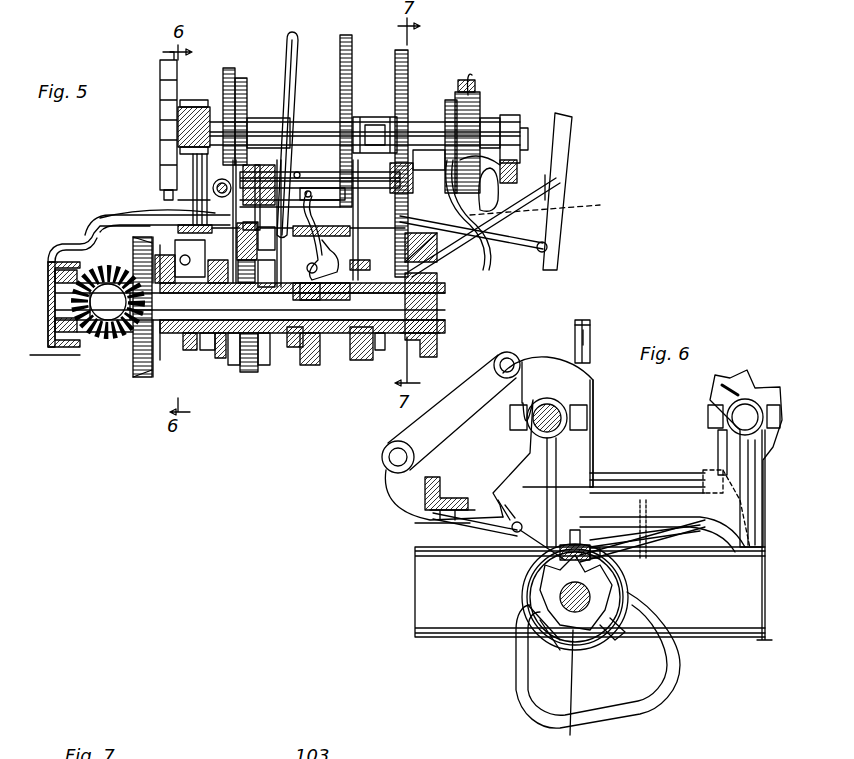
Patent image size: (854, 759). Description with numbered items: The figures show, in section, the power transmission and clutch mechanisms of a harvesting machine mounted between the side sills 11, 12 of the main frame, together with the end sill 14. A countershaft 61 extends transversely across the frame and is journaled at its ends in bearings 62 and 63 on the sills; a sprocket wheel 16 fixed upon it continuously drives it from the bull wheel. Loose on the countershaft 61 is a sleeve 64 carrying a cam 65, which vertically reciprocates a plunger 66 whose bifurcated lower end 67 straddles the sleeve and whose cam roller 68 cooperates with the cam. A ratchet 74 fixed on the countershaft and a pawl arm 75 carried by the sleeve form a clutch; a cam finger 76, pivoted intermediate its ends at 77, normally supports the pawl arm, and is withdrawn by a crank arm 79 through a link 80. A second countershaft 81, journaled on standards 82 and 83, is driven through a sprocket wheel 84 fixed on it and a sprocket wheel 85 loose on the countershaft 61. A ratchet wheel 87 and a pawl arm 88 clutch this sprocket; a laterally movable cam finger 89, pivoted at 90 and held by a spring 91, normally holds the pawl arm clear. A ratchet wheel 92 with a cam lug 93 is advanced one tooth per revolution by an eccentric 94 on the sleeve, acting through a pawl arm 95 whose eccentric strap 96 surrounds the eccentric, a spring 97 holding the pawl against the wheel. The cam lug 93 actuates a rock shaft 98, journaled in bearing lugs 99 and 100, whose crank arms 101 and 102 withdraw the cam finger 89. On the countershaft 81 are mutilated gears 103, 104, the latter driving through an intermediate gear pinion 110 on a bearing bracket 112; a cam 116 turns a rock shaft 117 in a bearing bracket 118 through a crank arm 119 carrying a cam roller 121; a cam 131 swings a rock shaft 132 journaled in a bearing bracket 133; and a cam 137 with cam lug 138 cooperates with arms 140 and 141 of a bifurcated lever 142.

In FIG. 5, the side sill 11 is at (57, 350).
In FIG. 5, the side sill 12 is at (437, 333).
In FIG. 6, the side sill 12 is at (420, 628).
In FIG. 6, the end sill 14 is at (763, 640).
In FIG. 5, the sprocket wheel 16 is at (295, 347).
In FIG. 5, the countershaft 61 is at (432, 293).
In FIG. 6, the countershaft 61 is at (560, 595).
In FIG. 5, the bearing 62 is at (50, 322).
In FIG. 5, the bearing 63 is at (432, 330).
In FIG. 5, the sleeve 64 is at (238, 365).
In FIG. 5, the cam 65 is at (248, 372).
In FIG. 6, the cam 65 is at (520, 705).
In FIG. 5, the plunger 66 is at (248, 124).
In FIG. 6, the plunger 66 is at (588, 332).
In FIG. 5, the bifurcated lower end 67 is at (264, 365).
In FIG. 5, the cam roller 68 is at (258, 180).
In FIG. 5, the ratchet wheel 74 is at (310, 365).
In FIG. 5, the pawl arm 75 is at (313, 235).
In FIG. 5, the cam finger 76 is at (355, 333).
In FIG. 5, the pivot 77 is at (330, 260).
In FIG. 5, the crank arm 79 is at (558, 186).
In FIG. 5, the link 80 is at (558, 228).
In FIG. 5, the second countershaft 81 is at (522, 125).
In FIG. 6, the second countershaft 81 is at (590, 418).
In FIG. 5, the standard 82 is at (190, 166).
In FIG. 6, the standard 82 is at (530, 455).
In FIG. 5, the standard 83 is at (378, 130).
In FIG. 5, the sprocket wheel 84 is at (160, 125).
In FIG. 5, the sprocket wheel 85 is at (155, 372).
In FIG. 5, the ratchet wheel 87 is at (206, 350).
In FIG. 6, the ratchet wheel 87 is at (545, 622).
In FIG. 5, the pawl arm 88 is at (160, 263).
In FIG. 6, the pawl arm 88 is at (540, 560).
In FIG. 5, the cam finger 89 is at (146, 222).
In FIG. 6, the cam finger 89 is at (520, 540).
In FIG. 6, the pivot 90 is at (440, 520).
In FIG. 5, the spring 91 is at (110, 213).
In FIG. 6, the spring 91 is at (510, 570).
In FIG. 6, the ratchet wheel 92 is at (760, 380).
In FIG. 6, the cam lug 93 is at (722, 388).
In FIG. 5, the eccentric 94 is at (191, 344).
In FIG. 6, the eccentric 94 is at (555, 625).
In FIG. 6, the pawl arm 95 is at (655, 538).
In FIG. 5, the eccentric strap 96 is at (222, 358).
In FIG. 6, the eccentric strap 96 is at (582, 693).
In FIG. 6, the spring 97 is at (645, 525).
In FIG. 5, the rock shaft 98 is at (215, 165).
In FIG. 6, the rock shaft 98 is at (653, 480).
In FIG. 6, the bearing lug 99 is at (647, 464).
In FIG. 6, the bearing lug 100 is at (705, 470).
In FIG. 6, the crank arm 101 is at (715, 440).
In FIG. 5, the crank arm 102 is at (212, 195).
In FIG. 6, the crank arm 102 is at (520, 525).
In FIG. 5, the mutilated gear 103 is at (341, 40).
In FIG. 5, the mutilated gear 104 is at (408, 62).
In FIG. 5, the intermediate gear pinion 110 is at (380, 350).
In FIG. 5, the bearing bracket 112 is at (500, 252).
In FIG. 5, the cam 116 is at (230, 70).
In FIG. 6, the cam 116 is at (548, 452).
In FIG. 5, the rock shaft 117 is at (298, 172).
In FIG. 6, the rock shaft 117 is at (388, 468).
In FIG. 5, the bearing bracket 118 is at (296, 93).
In FIG. 6, the bearing bracket 118 is at (405, 500).
In FIG. 5, the crank arm 119 is at (243, 80).
In FIG. 6, the crank arm 119 is at (452, 412).
In FIG. 6, the cam roller 121 is at (515, 358).
In FIG. 5, the cam 131 is at (565, 142).
In FIG. 5, the rock shaft 132 is at (560, 168).
In FIG. 5, the bearing bracket 133 is at (493, 215).
In FIG. 5, the cam 137 is at (470, 85).
In FIG. 5, the cam lug 138 is at (450, 104).
In FIG. 5, the arm 140 is at (429, 159).
In FIG. 5, the arm 141 is at (478, 104).
In FIG. 5, the bifurcated lever 142 is at (551, 204).